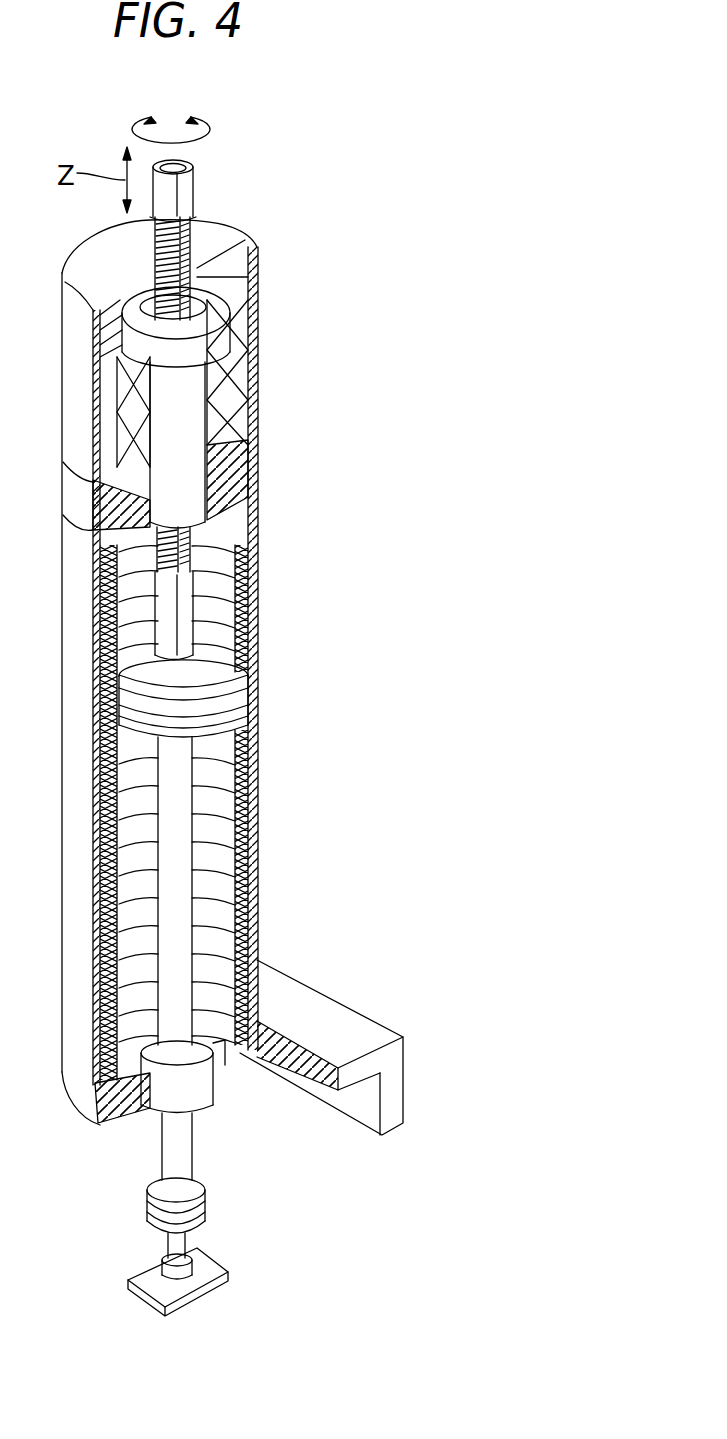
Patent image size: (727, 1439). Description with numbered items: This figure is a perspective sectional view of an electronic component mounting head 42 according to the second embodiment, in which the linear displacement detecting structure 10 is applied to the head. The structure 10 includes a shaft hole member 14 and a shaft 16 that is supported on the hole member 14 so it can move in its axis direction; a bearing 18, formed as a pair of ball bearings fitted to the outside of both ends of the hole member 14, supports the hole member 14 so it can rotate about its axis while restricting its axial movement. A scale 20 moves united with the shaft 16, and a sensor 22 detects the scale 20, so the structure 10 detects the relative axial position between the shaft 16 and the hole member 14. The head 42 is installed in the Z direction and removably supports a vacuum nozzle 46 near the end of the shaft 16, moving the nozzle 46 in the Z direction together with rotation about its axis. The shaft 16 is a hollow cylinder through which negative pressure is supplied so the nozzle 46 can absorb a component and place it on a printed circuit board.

The linear displacement detecting structure 10 is at (340, 258).
The shaft hole member 14 is at (205, 397).
The shaft 16 is at (235, 546).
The bearing 18 is at (250, 452).
The scale 20 is at (197, 277).
The sensor 22 is at (217, 343).
The electronic component mounting head 42 is at (280, 664).
The vacuum nozzle 46 is at (207, 1210).